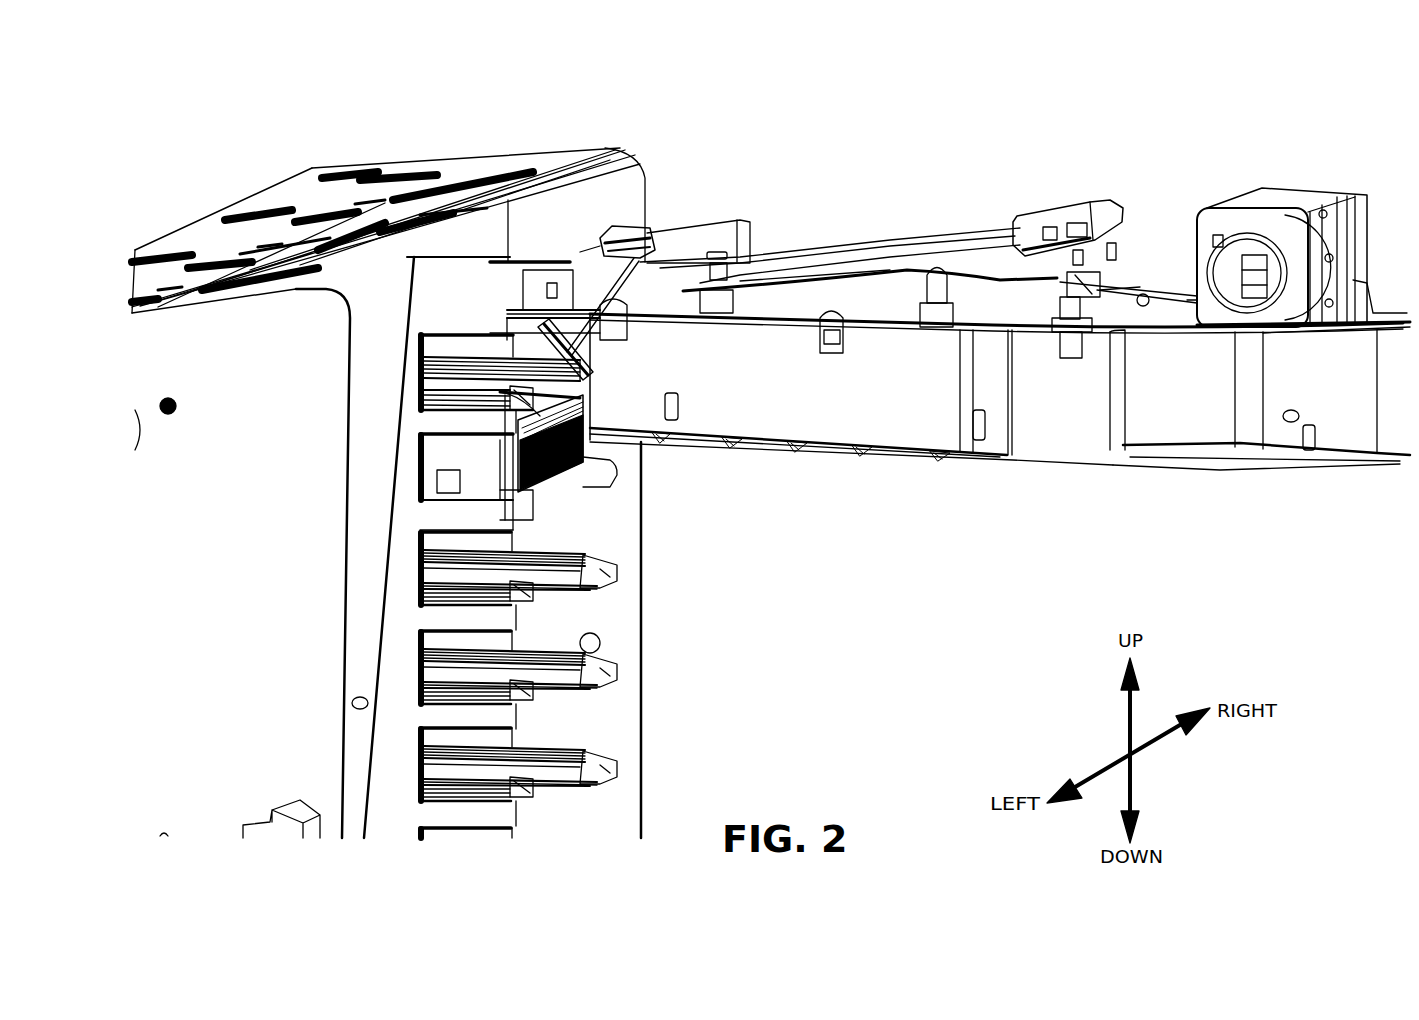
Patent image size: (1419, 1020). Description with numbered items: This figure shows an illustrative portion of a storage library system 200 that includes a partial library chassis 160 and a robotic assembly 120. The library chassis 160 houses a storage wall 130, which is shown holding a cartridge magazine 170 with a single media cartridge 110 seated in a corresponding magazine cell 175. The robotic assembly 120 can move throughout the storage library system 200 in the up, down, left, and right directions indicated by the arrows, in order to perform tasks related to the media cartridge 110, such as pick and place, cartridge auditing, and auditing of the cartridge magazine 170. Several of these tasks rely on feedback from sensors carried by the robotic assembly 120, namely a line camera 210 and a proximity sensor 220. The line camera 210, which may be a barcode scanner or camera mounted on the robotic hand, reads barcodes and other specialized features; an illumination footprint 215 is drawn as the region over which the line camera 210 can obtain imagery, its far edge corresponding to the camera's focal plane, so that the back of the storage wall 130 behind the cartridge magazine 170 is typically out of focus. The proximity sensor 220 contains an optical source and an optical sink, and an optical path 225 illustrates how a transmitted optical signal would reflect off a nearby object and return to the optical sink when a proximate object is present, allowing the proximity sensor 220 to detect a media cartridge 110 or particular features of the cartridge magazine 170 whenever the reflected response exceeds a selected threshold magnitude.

The storage library system 200 is at (226, 113).
The library chassis 160 is at (261, 605).
The media cartridge 110 is at (556, 462).
The cartridge magazine 170 is at (618, 672).
The magazine cell 175 is at (492, 737).
The storage wall 130 is at (625, 800).
The optical path 225 is at (570, 358).
The proximity sensor 220 is at (633, 226).
The illumination footprint 215 is at (877, 243).
The line camera 210 is at (1062, 202).
The robotic assembly 120 is at (1143, 427).